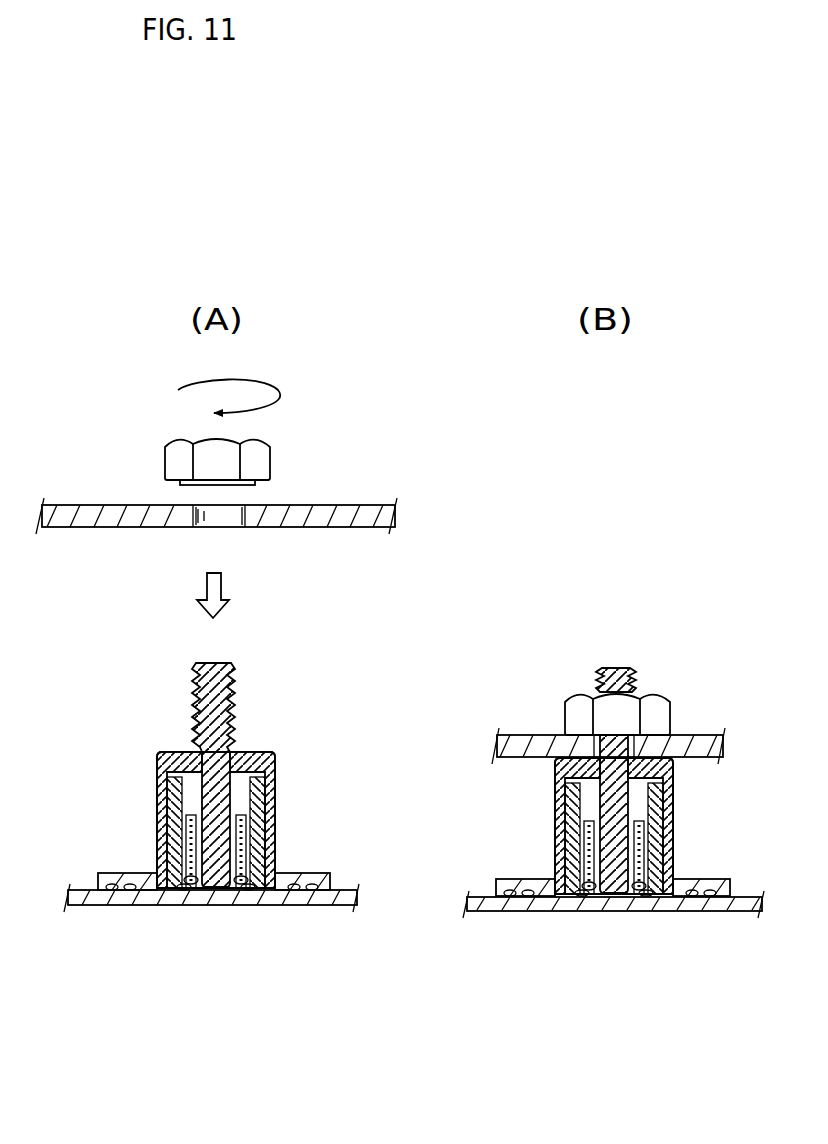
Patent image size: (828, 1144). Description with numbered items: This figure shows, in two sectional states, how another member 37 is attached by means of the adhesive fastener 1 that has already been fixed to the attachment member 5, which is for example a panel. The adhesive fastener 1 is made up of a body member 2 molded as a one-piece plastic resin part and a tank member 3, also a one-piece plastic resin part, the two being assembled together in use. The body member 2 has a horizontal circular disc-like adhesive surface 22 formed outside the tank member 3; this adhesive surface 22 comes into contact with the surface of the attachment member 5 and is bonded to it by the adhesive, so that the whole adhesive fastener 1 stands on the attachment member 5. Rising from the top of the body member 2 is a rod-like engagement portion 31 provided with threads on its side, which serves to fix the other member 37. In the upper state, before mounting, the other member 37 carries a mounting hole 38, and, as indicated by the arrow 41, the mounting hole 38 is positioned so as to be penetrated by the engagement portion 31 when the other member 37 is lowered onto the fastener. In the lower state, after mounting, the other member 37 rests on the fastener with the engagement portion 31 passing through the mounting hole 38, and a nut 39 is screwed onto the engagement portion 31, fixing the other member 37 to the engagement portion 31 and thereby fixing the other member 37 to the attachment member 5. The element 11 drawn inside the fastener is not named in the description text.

The adhesive fastener 1 is at (140, 735).
The body member 2 is at (154, 788).
The tank member 3 is at (162, 810).
The attachment member 5 is at (108, 898).
The helical insert 11 is at (237, 900).
The adhesive surface 22 is at (117, 873).
The engagement portion 31 is at (224, 712).
The other member 37 is at (345, 506).
The mounting hole 38 is at (238, 506).
The nut 39 is at (180, 452).
The arrow 41 is at (222, 592).